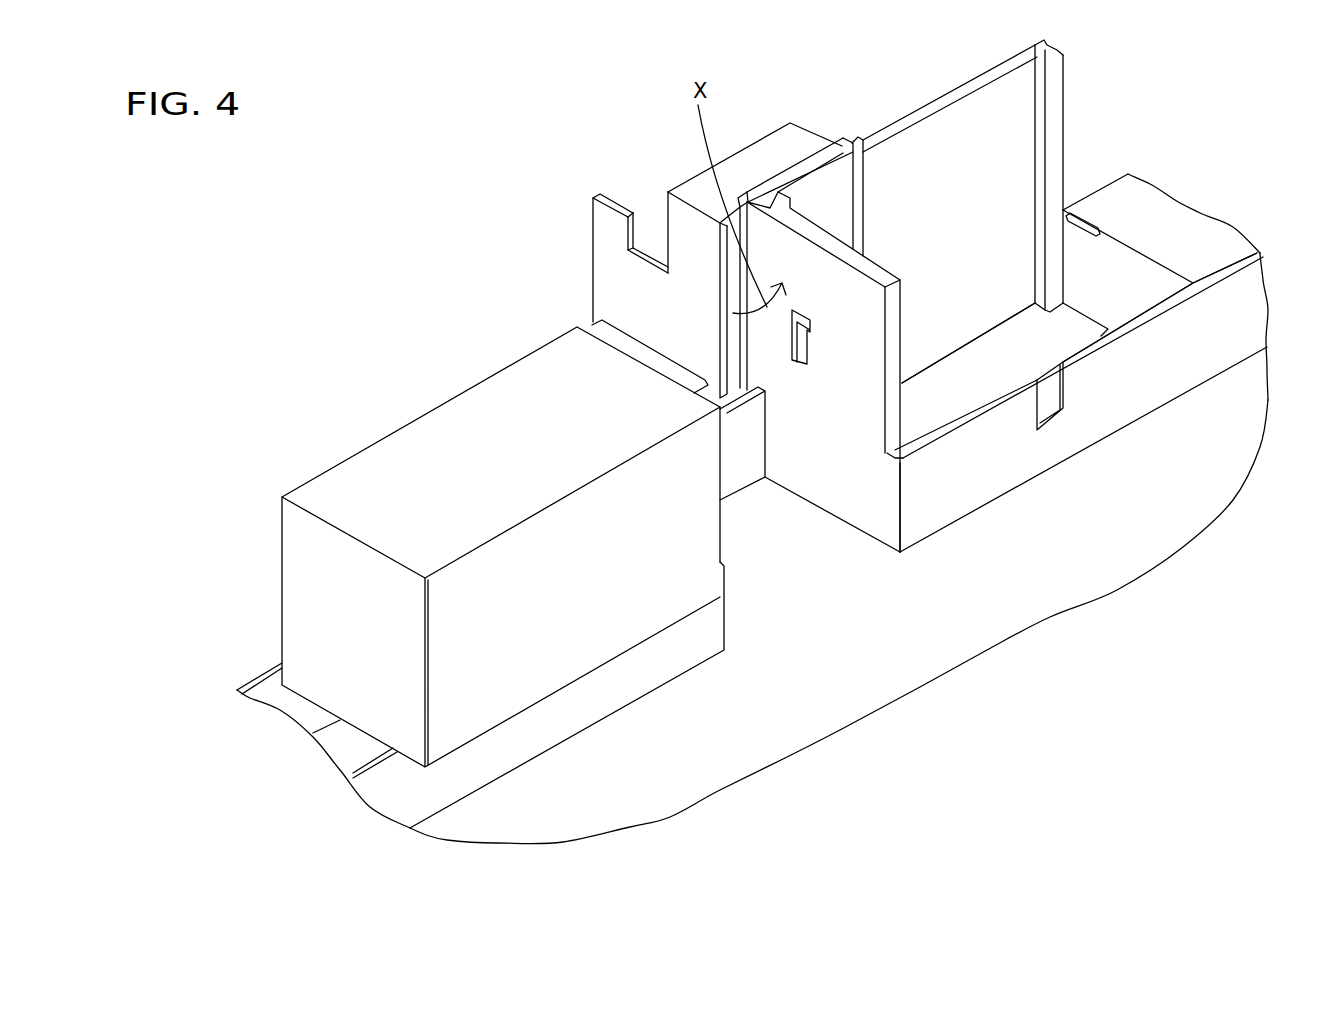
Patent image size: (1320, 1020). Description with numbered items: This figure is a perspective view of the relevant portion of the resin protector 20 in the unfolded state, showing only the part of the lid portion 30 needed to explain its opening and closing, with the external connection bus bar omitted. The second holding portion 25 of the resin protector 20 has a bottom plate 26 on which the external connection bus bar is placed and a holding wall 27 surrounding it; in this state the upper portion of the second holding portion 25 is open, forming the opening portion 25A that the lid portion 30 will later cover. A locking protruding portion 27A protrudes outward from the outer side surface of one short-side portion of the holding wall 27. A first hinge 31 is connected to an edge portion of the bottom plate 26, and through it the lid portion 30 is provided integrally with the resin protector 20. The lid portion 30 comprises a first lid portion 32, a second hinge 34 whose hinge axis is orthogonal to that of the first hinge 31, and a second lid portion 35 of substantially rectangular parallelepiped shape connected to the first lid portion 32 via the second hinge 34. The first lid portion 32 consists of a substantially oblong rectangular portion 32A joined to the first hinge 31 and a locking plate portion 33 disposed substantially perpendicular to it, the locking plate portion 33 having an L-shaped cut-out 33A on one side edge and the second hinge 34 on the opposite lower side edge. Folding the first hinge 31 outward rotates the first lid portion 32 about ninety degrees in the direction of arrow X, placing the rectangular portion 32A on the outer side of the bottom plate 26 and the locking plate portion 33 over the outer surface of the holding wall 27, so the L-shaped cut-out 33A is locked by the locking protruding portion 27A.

The resin protector 20 is at (536, 132).
The second holding portion 25 is at (952, 406).
The opening portion 25A is at (1170, 298).
The bottom plate 26 is at (915, 145).
The holding wall 27 is at (848, 462).
The locking protruding portion 27A is at (815, 367).
The lid portion 30 is at (501, 506).
The first hinge 31 is at (822, 155).
The first lid portion 32 is at (712, 229).
The rectangular portion 32A is at (762, 152).
The locking plate portion 33 is at (603, 197).
The L-shaped cut-out 33A is at (637, 233).
The second hinge 34 is at (593, 325).
The second lid portion 35 is at (455, 415).